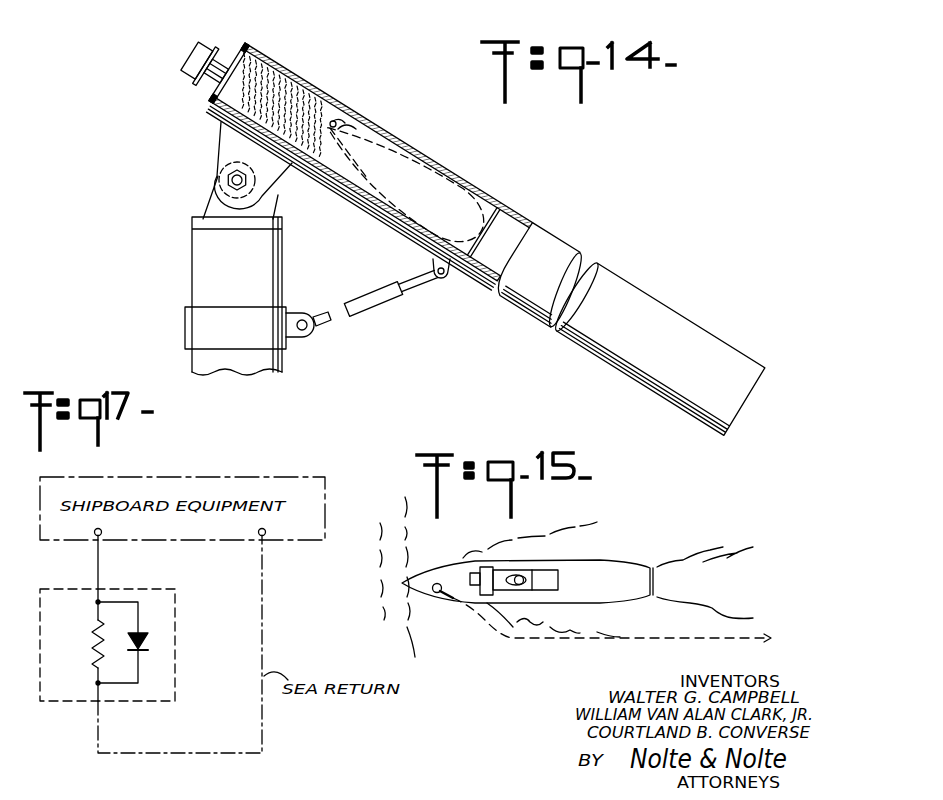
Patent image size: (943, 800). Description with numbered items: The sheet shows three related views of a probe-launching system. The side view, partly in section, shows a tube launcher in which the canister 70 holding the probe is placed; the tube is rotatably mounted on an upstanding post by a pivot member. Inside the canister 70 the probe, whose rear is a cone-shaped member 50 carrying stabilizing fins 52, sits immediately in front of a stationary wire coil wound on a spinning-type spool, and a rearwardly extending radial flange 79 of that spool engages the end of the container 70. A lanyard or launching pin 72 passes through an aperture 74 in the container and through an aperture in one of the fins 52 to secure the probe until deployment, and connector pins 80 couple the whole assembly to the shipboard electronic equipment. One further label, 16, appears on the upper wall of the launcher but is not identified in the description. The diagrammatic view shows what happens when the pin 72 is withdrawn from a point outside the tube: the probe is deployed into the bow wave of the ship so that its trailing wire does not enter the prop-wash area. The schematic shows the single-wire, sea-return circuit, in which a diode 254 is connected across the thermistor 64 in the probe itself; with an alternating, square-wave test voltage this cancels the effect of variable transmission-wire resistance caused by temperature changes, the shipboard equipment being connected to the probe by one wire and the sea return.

In FIG. 14, the tube wall 16 is at (301, 77).
In FIG. 14, the cone-shaped member 50 is at (424, 146).
In FIG. 14, the stabilizing fins 52 is at (398, 150).
In FIG. 14, the container 70 is at (503, 202).
In FIG. 14, the launching pin 72 is at (337, 122).
In FIG. 14, the aperture 74 is at (352, 127).
In FIG. 14, the radial flange 79 is at (209, 106).
In FIG. 14, the connector pins 80 is at (221, 62).
In FIG. 17, the thermistor 64 is at (94, 648).
In FIG. 17, the diode 254 is at (148, 640).